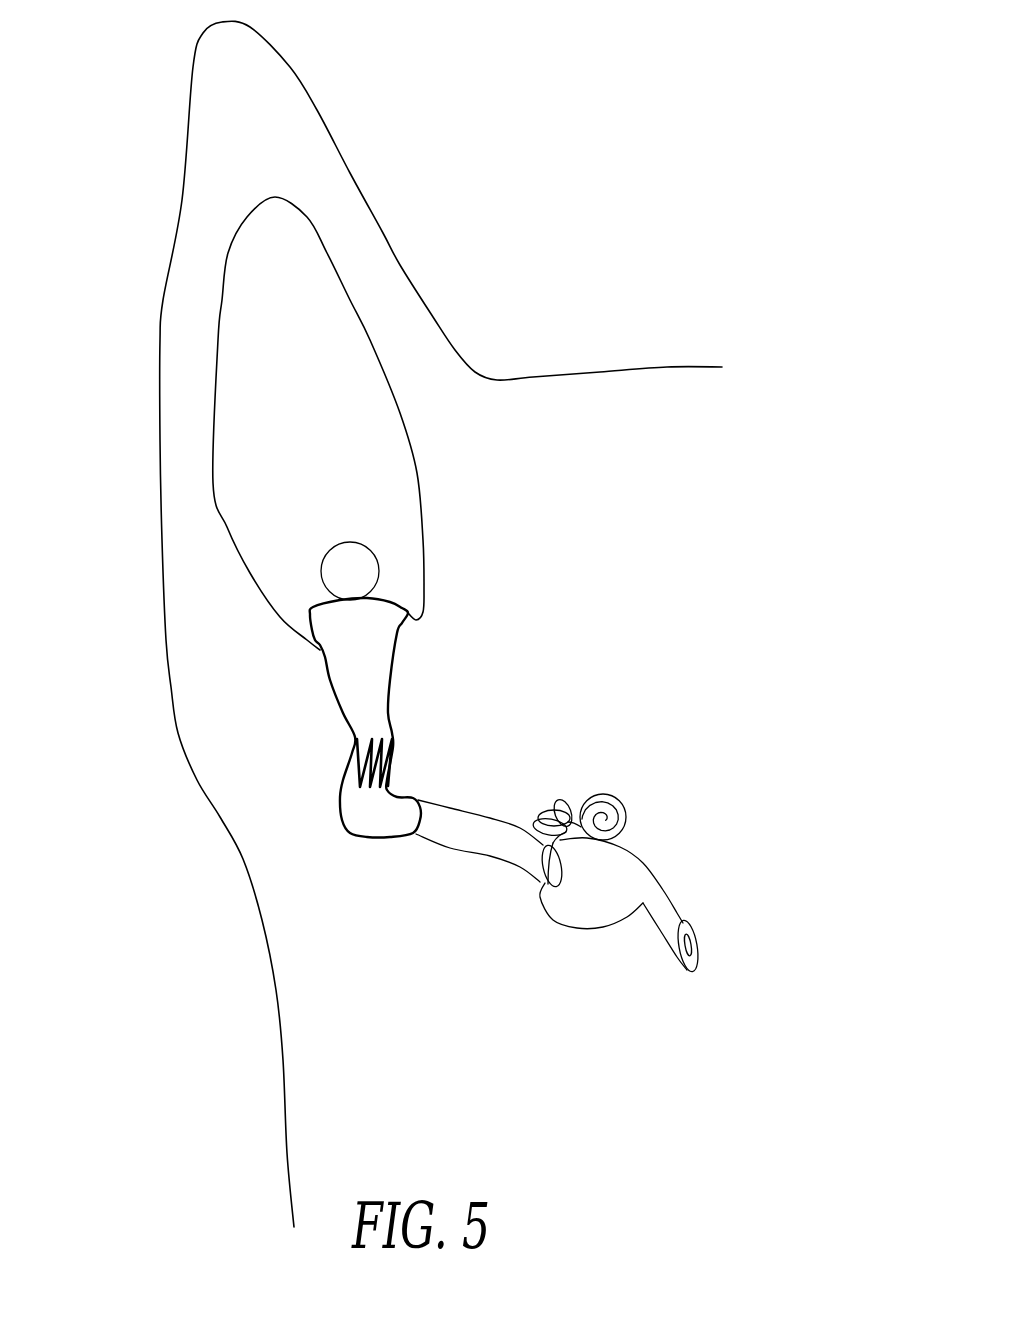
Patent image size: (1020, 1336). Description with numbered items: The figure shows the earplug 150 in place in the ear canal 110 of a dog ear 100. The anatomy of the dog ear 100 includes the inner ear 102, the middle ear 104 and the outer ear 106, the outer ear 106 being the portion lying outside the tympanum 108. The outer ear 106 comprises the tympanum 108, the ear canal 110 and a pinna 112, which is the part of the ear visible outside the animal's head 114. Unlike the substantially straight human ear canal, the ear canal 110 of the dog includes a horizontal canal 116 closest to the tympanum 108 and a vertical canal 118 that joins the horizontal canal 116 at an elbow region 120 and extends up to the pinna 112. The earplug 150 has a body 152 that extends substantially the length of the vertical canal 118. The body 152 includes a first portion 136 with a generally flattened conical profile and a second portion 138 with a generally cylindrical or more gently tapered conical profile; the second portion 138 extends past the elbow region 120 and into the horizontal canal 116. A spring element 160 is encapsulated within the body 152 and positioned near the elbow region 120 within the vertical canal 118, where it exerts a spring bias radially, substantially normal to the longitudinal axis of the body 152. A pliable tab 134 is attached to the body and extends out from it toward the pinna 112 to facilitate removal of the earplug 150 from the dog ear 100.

The dog ear 100 is at (106, 607).
The inner ear 102 is at (597, 906).
The middle ear 104 is at (614, 962).
The outer ear 106 is at (553, 606).
The tympanum 108 is at (543, 870).
The ear canal 110 is at (487, 720).
The pinna 112 is at (365, 196).
The head 114 is at (645, 372).
The horizontal canal 116 is at (470, 855).
The vertical canal 118 is at (333, 700).
The elbow region 120 is at (345, 830).
The tab 134 is at (365, 553).
The first portion 136 is at (388, 633).
The second portion 138 is at (400, 825).
The earplug 150 is at (364, 668).
The body 152 is at (388, 607).
The spring element 160 is at (403, 740).